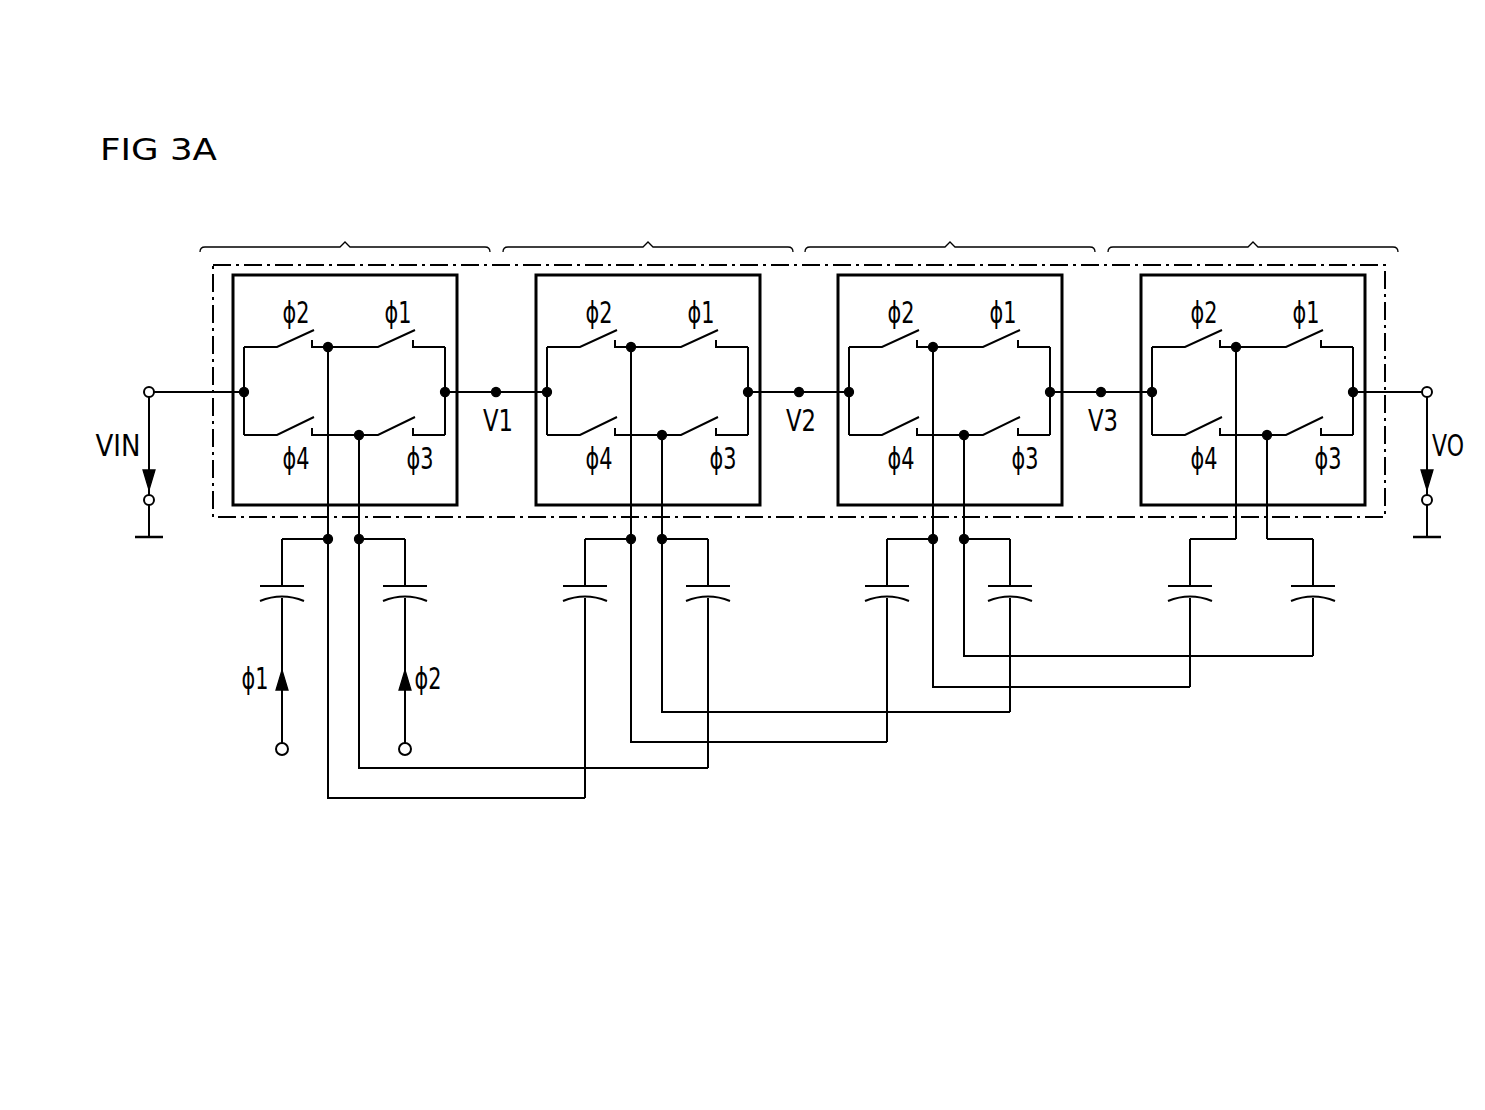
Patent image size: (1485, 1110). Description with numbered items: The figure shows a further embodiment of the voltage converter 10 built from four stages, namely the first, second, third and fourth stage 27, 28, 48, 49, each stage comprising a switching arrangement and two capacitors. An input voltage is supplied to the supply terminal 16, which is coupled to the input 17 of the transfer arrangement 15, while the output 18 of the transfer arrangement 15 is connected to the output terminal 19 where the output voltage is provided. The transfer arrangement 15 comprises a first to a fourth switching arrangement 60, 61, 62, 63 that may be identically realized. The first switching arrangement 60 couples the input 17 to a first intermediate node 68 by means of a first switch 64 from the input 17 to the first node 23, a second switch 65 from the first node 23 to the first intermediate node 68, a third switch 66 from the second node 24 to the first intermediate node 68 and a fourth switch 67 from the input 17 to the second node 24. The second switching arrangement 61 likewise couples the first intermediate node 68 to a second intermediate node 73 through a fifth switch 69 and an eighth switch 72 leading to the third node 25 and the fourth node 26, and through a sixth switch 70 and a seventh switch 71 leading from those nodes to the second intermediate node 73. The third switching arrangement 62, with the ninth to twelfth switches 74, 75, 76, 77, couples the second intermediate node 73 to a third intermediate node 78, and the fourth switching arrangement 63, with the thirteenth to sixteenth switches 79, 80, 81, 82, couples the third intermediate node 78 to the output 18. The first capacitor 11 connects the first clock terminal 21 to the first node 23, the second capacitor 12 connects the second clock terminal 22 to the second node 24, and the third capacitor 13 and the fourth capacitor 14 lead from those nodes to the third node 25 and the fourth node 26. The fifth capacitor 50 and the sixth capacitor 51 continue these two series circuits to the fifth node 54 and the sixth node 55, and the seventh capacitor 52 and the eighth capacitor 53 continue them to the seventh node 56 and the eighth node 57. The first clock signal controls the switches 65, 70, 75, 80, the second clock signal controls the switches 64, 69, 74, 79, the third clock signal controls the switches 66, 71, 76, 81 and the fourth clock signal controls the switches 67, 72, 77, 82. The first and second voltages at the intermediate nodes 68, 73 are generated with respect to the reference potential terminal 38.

The voltage converter 10 is at (1342, 199).
The first capacitor 11 is at (272, 585).
The second capacitor 12 is at (418, 585).
The third capacitor 13 is at (575, 585).
The fourth capacitor 14 is at (718, 585).
The transfer arrangement 15 is at (814, 520).
The supply terminal 16 is at (149, 385).
The input 17 is at (237, 389).
The output 18 is at (1357, 390).
The output terminal 19 is at (1428, 386).
The first clock terminal 21 is at (275, 749).
The second clock terminal 22 is at (412, 749).
The first node 23 is at (329, 342).
The second node 24 is at (360, 440).
The third node 25 is at (641, 406).
The fourth node 26 is at (680, 485).
The first stage 27 is at (345, 230).
The second stage 28 is at (648, 230).
The reference potential terminal 38 is at (152, 540).
The third stage 48 is at (950, 230).
The fourth stage 49 is at (1253, 230).
The fifth capacitor 50 is at (877, 585).
The sixth capacitor 51 is at (1022, 585).
The seventh capacitor 52 is at (1180, 585).
The eighth capacitor 53 is at (1322, 585).
The fifth node 54 is at (943, 406).
The sixth node 55 is at (982, 485).
The seventh node 56 is at (1246, 406).
The eighth node 57 is at (1285, 485).
The first switching arrangement 60 is at (233, 465).
The second switching arrangement 61 is at (618, 390).
The third switching arrangement 62 is at (920, 390).
The fourth switching arrangement 63 is at (1223, 390).
The first switch 64 is at (288, 337).
The second switch 65 is at (400, 340).
The third switch 66 is at (396, 422).
The fourth switch 67 is at (292, 423).
The first intermediate node 68 is at (496, 387).
The fifth switch 69 is at (589, 320).
The sixth switch 70 is at (689, 363).
The seventh switch 71 is at (700, 405).
The eighth switch 72 is at (604, 401).
The second intermediate node 73 is at (799, 346).
The ninth switch 74 is at (891, 320).
The tenth switch 75 is at (991, 363).
The eleventh switch 76 is at (1002, 405).
The twelfth switch 77 is at (906, 401).
The third intermediate node 78 is at (1101, 346).
The thirteenth switch 79 is at (1194, 320).
The fourteenth switch 80 is at (1294, 363).
The fifteenth switch 81 is at (1305, 405).
The sixteenth switch 82 is at (1209, 401).